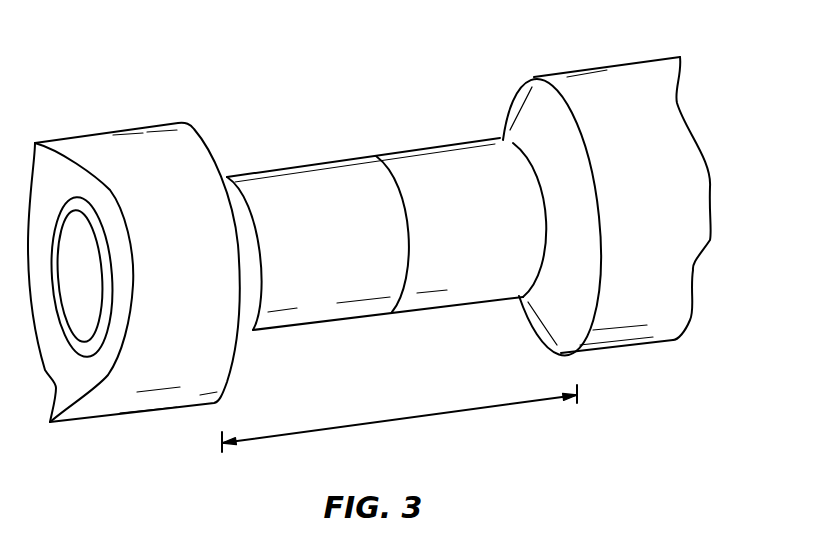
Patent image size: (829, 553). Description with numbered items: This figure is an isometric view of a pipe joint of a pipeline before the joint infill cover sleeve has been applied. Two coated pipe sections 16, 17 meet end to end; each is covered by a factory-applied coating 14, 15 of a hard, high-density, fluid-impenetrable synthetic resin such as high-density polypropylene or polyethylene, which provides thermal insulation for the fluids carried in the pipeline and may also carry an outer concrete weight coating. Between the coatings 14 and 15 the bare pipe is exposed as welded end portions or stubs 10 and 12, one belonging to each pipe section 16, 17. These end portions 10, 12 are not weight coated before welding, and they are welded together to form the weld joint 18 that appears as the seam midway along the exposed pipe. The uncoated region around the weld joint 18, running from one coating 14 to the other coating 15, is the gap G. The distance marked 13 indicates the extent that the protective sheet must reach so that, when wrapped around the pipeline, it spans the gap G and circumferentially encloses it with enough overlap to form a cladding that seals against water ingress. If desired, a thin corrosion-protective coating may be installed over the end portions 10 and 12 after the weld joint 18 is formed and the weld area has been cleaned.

The welded end portion 10 is at (320, 327).
The welded end portion 12 is at (477, 307).
The transverse extent of sheet 13 is at (385, 422).
The coating 14 is at (224, 173).
The coating 15 is at (513, 113).
The coated pipe section 16 is at (120, 130).
The coated pipe section 17 is at (588, 65).
The weld joint 18 is at (410, 290).
The gap G is at (383, 342).